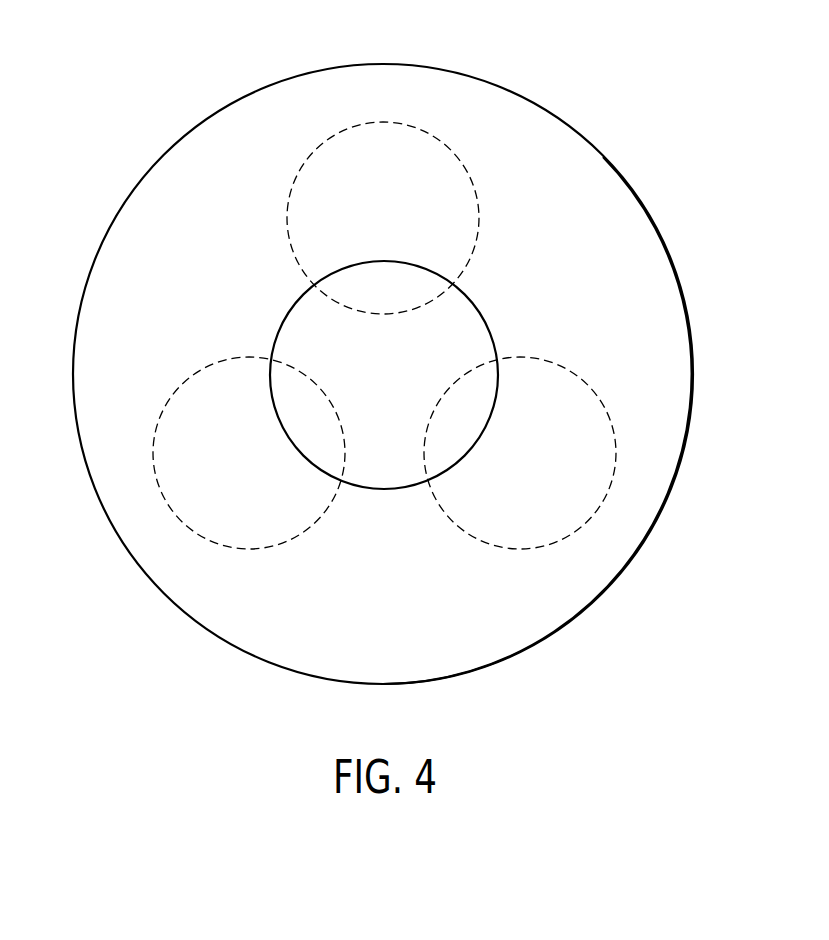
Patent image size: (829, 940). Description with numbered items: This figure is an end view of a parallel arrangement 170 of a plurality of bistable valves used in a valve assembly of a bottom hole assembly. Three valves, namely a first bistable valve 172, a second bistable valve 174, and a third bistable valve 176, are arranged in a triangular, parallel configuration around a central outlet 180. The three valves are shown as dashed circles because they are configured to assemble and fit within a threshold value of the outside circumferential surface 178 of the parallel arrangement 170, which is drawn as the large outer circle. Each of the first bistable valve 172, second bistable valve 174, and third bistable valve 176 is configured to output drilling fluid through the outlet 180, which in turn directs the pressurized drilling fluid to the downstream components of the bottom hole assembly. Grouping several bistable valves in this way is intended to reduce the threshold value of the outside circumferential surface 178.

The parallel arrangement 170 is at (145, 130).
The first bistable valve 172 is at (165, 502).
The second bistable valve 174 is at (605, 502).
The third bistable valve 176 is at (455, 147).
The outside circumferential surface 178 is at (603, 157).
The outlet 180 is at (308, 293).